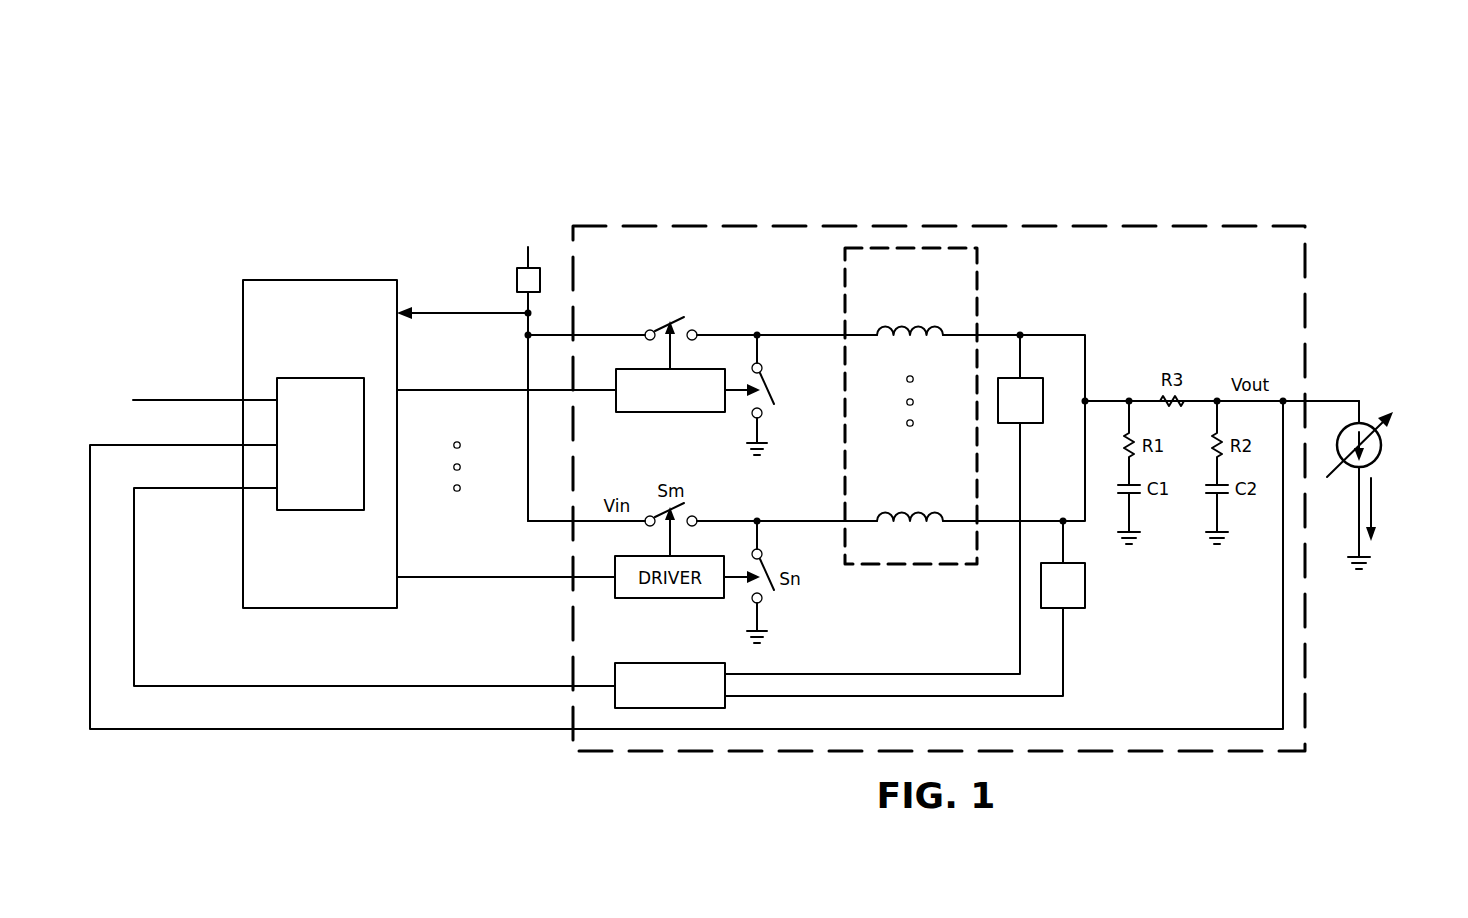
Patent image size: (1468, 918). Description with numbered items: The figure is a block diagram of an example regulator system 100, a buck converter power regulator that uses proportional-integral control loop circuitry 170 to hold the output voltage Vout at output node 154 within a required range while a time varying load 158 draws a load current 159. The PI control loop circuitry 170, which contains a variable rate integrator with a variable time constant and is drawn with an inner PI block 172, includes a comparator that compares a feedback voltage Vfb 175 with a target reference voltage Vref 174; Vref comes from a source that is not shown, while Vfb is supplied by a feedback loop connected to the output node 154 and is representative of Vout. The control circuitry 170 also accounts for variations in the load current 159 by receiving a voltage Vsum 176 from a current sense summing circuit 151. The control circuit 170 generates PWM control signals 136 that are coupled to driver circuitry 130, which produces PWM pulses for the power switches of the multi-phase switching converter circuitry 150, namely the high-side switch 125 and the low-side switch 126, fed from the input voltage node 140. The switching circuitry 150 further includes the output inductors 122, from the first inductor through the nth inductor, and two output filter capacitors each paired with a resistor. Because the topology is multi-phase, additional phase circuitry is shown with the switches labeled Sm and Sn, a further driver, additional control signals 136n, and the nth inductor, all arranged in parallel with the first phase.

The regulator system 100 is at (432, 176).
The output inductors 122 is at (933, 318).
The high-side switch 125 is at (652, 326).
The low-side switch 126 is at (771, 377).
The driver circuitry 130 is at (648, 414).
The PWM control signals 136 is at (495, 388).
The control signals 136n is at (498, 579).
The input voltage node 140 is at (513, 280).
The multi-phase switching converter circuitry 150 is at (1096, 226).
The current sense summing circuit 151 is at (668, 662).
The output node 154 is at (1332, 399).
The time varying load 158 is at (1385, 447).
The load current 159 is at (1375, 489).
The PI control loop circuitry 170 is at (318, 280).
The PI compensator 172 is at (320, 512).
The target reference voltage 174 is at (157, 399).
The feedback voltage 175 is at (112, 444).
The voltage Vsum 176 is at (188, 490).